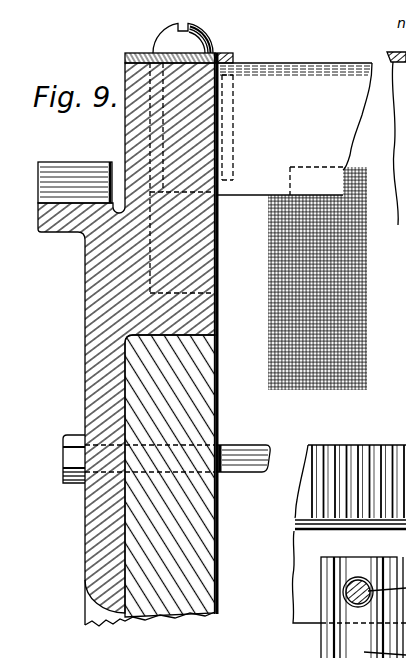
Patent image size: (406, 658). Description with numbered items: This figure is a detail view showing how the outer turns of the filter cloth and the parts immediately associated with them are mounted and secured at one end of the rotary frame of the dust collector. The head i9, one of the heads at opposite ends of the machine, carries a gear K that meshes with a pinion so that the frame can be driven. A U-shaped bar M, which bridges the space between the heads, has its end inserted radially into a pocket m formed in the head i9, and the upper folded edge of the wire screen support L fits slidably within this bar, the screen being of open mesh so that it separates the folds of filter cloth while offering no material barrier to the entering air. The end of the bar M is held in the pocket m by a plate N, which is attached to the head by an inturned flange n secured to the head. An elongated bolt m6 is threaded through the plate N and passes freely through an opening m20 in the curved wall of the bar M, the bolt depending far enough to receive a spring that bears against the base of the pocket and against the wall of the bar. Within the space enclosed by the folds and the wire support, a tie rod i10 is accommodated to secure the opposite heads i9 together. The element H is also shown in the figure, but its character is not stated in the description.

The elongated bolt m6 is at (160, 46).
The plate N is at (231, 51).
The inturned flange n is at (239, 127).
The U-shaped bar M is at (320, 645).
The gear K is at (70, 176).
The head i9 is at (95, 313).
The wire screen support L is at (353, 316).
The core block H is at (205, 414).
The tie rod i10 is at (230, 471).
The pocket m is at (320, 591).
The opening m20 is at (357, 577).